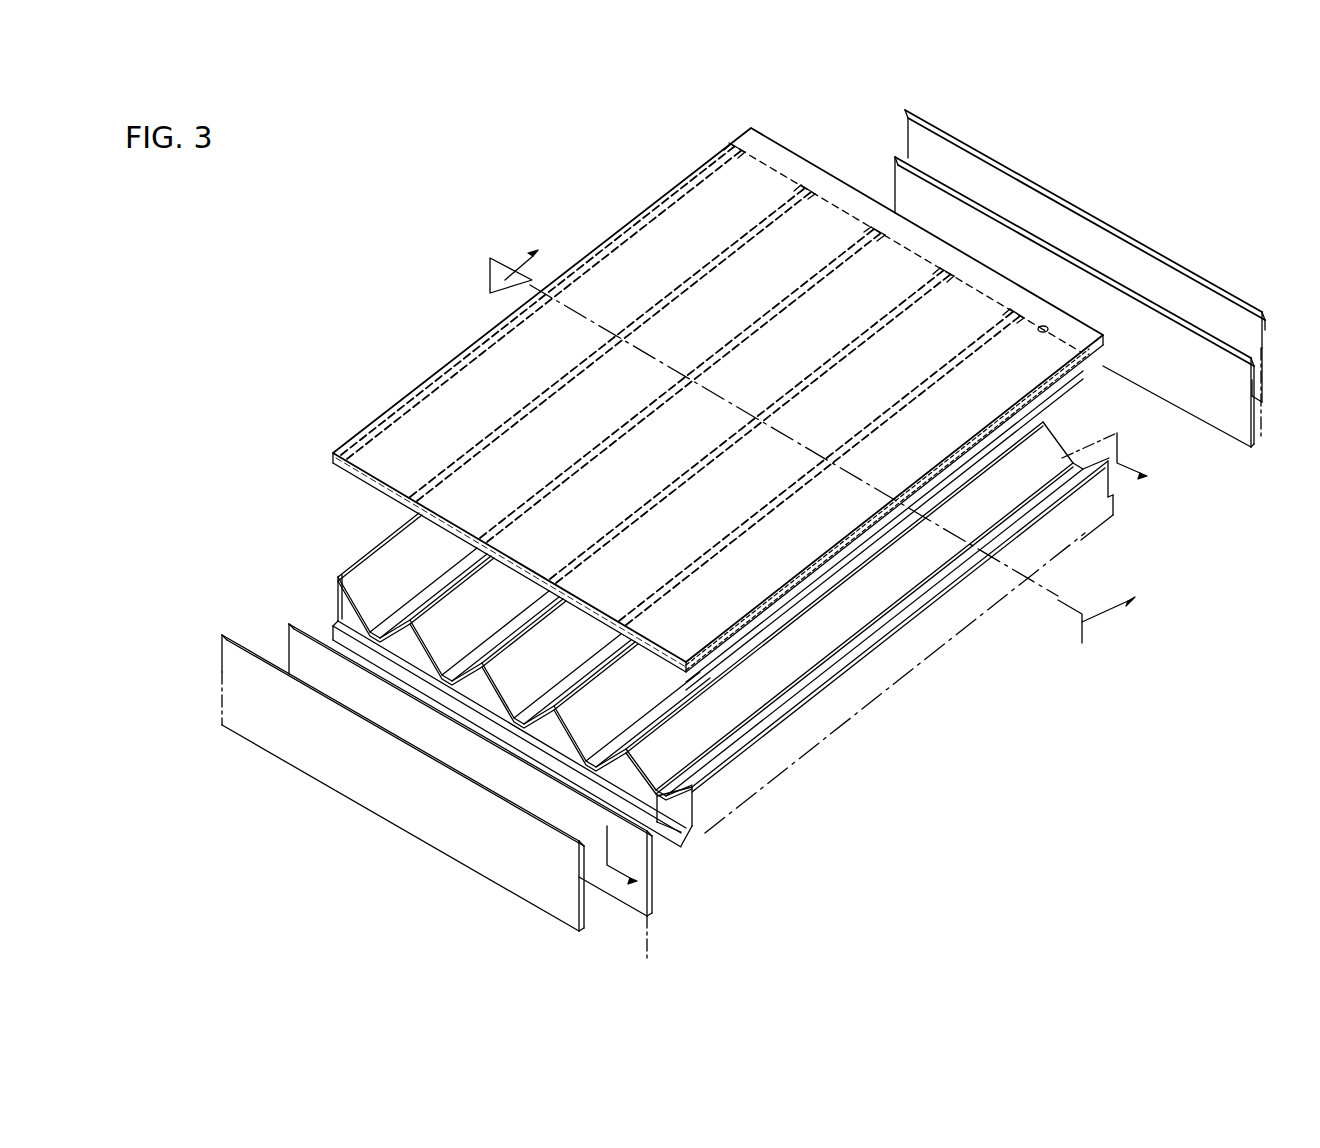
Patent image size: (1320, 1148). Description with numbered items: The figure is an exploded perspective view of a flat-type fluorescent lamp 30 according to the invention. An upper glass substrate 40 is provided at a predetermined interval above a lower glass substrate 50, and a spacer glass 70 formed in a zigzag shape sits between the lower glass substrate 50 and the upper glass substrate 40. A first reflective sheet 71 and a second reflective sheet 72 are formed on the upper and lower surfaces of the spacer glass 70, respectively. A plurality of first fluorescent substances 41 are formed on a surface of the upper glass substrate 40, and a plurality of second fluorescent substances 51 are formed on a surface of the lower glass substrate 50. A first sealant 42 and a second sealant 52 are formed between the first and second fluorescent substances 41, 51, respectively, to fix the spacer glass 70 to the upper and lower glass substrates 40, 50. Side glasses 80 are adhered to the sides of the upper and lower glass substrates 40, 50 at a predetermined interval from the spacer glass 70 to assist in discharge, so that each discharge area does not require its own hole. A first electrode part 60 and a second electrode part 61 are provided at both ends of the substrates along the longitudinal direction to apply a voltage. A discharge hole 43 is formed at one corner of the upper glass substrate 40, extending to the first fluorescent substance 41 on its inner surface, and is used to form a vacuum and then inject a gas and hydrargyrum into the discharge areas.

The flat-type fluorescent lamp 30 is at (586, 218).
The upper glass substrate 40 is at (427, 380).
The first fluorescent substances 41 is at (793, 545).
The first sealant 42 is at (688, 580).
The discharge hole 43 is at (1047, 326).
The lower glass substrate 50 is at (430, 685).
The second fluorescent substances 51 is at (690, 813).
The second sealant 52 is at (658, 815).
The first electrode part 60 is at (387, 805).
The second electrode part 61 is at (1178, 270).
The spacer glass 70 is at (345, 590).
The first reflective sheet 71 is at (353, 600).
The second reflective sheet 72 is at (338, 615).
The side glasses 80 is at (337, 680).